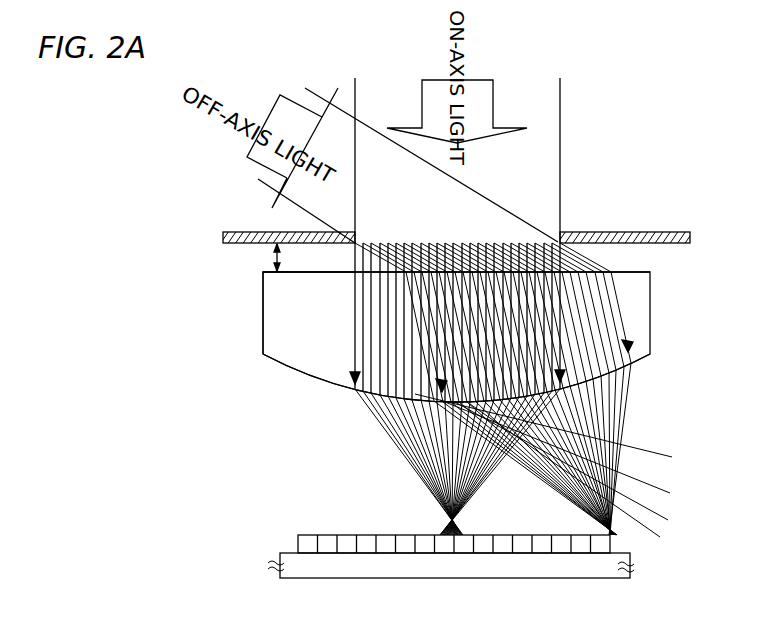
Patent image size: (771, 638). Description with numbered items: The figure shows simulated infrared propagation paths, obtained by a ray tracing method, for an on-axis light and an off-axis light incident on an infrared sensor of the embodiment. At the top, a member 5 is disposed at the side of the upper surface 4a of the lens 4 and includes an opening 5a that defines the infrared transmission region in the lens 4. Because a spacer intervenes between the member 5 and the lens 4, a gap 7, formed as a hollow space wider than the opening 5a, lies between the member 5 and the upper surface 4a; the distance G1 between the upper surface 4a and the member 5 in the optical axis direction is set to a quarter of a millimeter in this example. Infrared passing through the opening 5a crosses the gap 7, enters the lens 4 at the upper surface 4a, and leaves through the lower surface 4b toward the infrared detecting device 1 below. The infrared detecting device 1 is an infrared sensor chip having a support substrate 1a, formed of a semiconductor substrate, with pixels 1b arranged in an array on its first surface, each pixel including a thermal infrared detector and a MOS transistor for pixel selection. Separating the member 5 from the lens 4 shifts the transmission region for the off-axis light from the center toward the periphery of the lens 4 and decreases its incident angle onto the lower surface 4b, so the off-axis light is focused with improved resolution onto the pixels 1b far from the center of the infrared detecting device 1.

The infrared detecting device 1 is at (451, 557).
The support substrate 1a is at (570, 572).
The pixels 1b is at (308, 550).
The lens 4 is at (642, 308).
The upper surface 4a is at (392, 270).
The lower surface 4b is at (407, 396).
The member 5 is at (628, 232).
The opening 5a is at (538, 241).
The gap 7 is at (322, 258).
The distance G1 is at (272, 258).